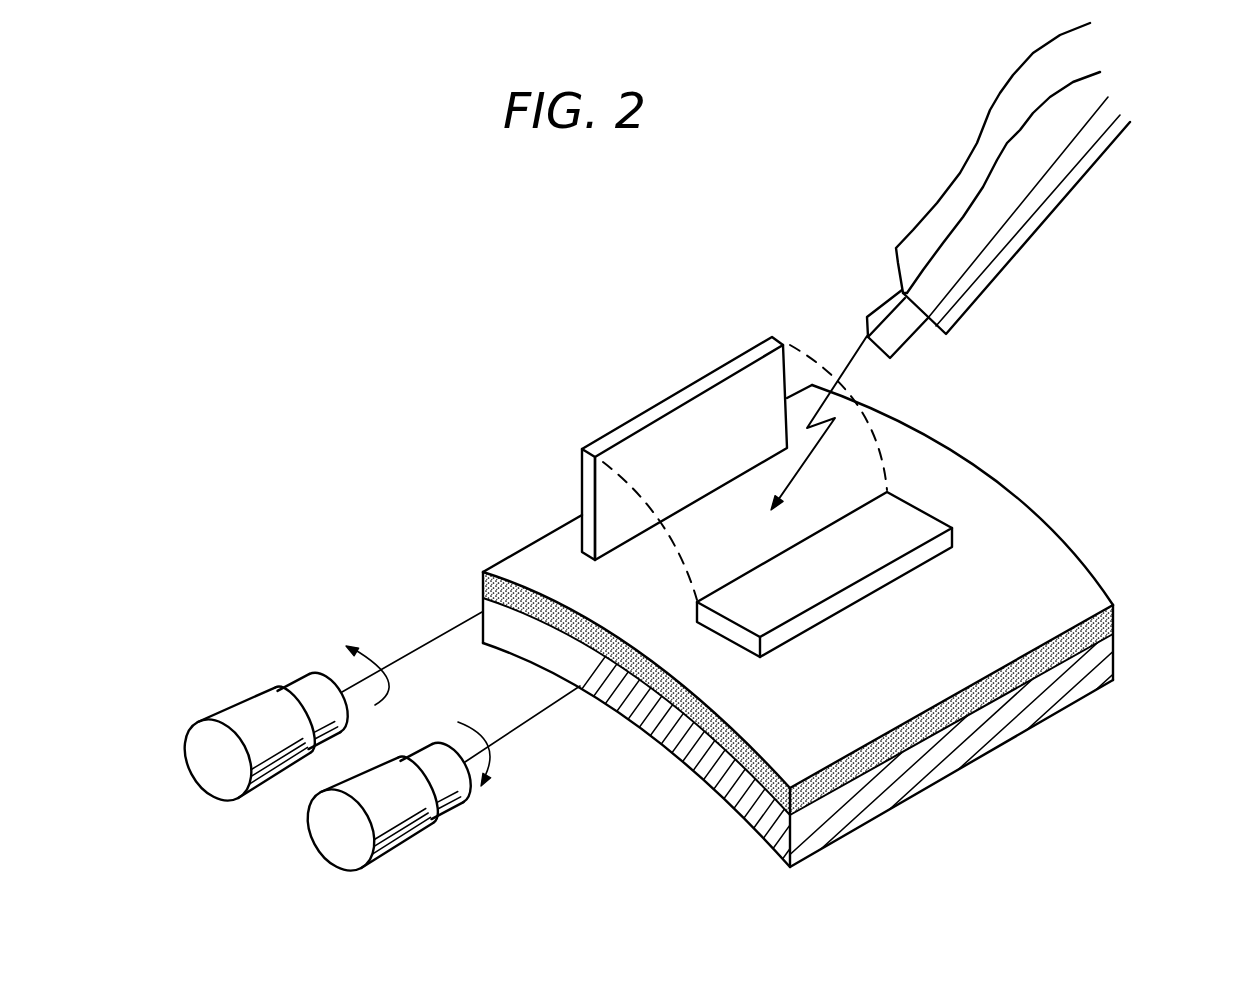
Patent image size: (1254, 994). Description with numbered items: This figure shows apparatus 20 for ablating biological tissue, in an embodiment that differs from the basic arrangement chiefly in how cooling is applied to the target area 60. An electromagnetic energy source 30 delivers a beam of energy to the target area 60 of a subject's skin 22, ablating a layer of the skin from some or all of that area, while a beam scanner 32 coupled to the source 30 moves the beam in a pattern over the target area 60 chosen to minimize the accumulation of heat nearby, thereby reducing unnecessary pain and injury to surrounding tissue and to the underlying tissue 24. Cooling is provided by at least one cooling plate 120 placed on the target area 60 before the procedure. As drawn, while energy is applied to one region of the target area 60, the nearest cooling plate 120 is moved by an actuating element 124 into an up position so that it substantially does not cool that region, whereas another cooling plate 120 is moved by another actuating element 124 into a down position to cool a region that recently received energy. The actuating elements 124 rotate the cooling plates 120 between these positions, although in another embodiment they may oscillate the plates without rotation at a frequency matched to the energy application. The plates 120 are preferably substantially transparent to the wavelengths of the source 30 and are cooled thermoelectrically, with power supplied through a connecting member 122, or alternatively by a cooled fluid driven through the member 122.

The apparatus 20 is at (842, 620).
The skin 22 is at (1113, 620).
The underlying tissue 24 is at (1098, 668).
The electromagnetic energy source 30 is at (1022, 240).
The beam scanner 32 is at (910, 345).
The target area 60 is at (833, 335).
The cooling plate 120 is at (660, 410).
The connecting member 122 is at (427, 641).
The actuating element 124 is at (245, 703).